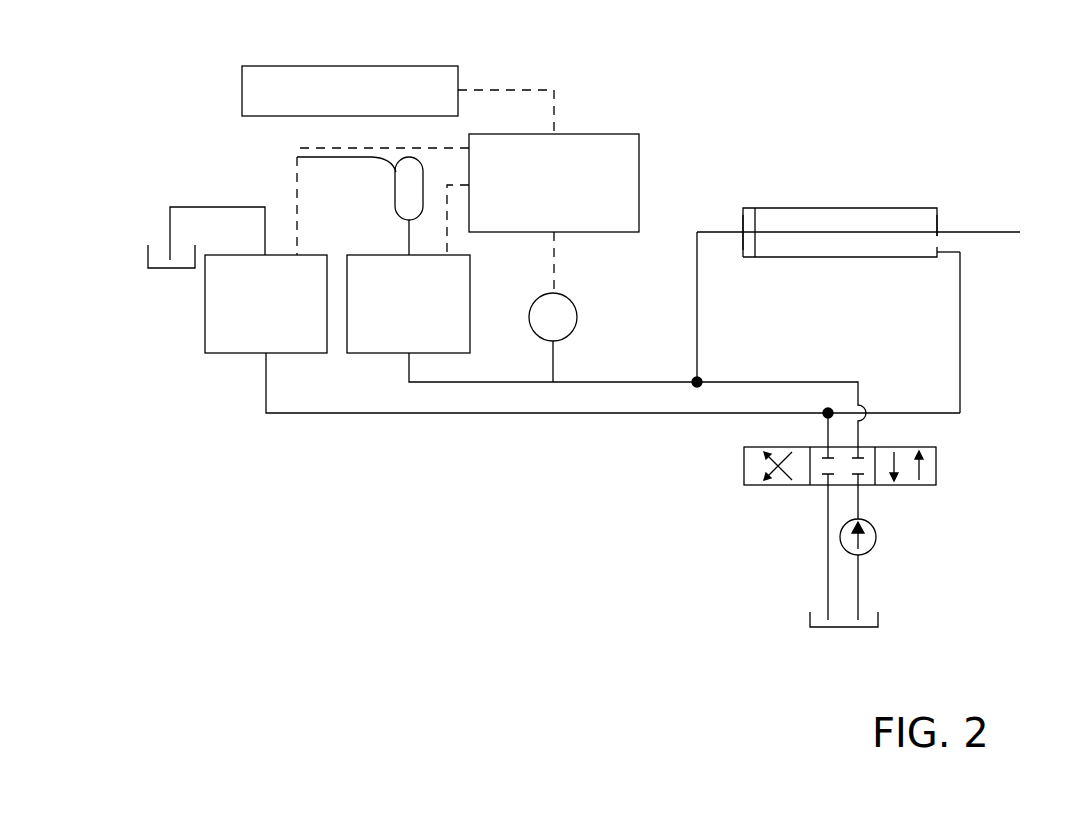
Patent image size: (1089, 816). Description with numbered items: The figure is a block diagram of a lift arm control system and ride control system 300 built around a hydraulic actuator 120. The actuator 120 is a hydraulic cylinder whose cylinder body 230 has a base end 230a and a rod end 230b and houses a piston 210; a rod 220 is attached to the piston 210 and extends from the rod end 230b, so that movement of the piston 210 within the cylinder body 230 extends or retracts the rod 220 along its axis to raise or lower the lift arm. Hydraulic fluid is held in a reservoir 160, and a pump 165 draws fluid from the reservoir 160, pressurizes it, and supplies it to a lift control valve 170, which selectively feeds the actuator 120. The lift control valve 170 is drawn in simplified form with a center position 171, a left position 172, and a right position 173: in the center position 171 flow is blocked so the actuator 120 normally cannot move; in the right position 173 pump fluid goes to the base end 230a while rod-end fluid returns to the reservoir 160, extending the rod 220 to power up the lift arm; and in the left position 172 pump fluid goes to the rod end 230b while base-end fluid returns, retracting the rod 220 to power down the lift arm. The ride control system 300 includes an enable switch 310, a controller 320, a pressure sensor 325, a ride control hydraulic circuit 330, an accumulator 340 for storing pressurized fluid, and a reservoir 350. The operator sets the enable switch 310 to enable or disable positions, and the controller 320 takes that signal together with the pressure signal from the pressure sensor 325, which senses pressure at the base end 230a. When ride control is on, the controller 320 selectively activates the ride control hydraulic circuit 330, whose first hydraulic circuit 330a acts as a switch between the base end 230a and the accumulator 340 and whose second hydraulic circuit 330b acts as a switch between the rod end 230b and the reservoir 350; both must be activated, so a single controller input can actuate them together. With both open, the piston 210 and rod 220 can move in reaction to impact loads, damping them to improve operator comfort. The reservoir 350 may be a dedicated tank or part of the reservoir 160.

The actuator 120 is at (884, 208).
The reservoir 160 is at (878, 612).
The pump 165 is at (877, 535).
The lift control valve 170 is at (852, 476).
The center position 171 is at (822, 488).
The left position 172 is at (744, 485).
The right position 173 is at (905, 486).
The piston 210 is at (755, 257).
The rod 220 is at (985, 235).
The cylinder body 230 is at (805, 208).
The base end 230a is at (743, 208).
The rod end 230b is at (937, 208).
The ride control system 300 is at (366, 498).
The enable switch 310 is at (405, 64).
The controller 320 is at (554, 183).
The pressure sensor 325 is at (575, 300).
The ride control hydraulic circuit 330 is at (328, 376).
The first hydraulic circuit 330a is at (408, 304).
The second hydraulic circuit 330b is at (266, 304).
The accumulator 340 is at (297, 158).
The reservoir 350 is at (160, 245).